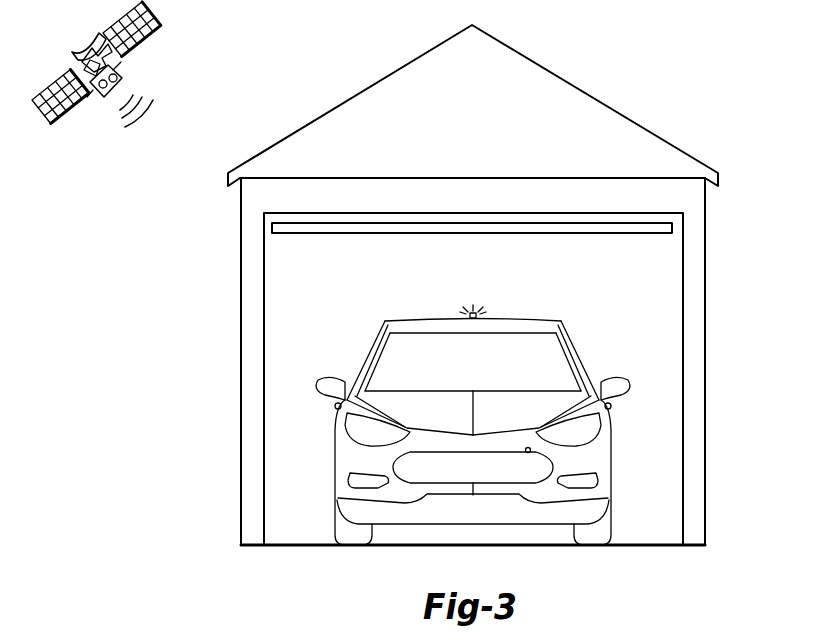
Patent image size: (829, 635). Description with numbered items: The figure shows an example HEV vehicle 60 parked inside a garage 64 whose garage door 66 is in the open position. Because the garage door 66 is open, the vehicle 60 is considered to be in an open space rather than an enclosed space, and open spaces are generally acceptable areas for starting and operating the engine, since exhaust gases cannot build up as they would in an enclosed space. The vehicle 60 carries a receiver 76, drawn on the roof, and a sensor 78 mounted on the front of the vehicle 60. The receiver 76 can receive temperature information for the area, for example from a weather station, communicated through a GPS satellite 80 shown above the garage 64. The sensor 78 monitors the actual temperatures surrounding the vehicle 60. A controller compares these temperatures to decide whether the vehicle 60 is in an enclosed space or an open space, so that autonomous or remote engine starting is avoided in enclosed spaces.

The vehicle 60 is at (495, 410).
The garage 64 is at (497, 285).
The garage door 66 is at (297, 228).
The receiver 76 is at (473, 313).
The sensor 78 is at (528, 447).
The GPS satellite 80 is at (196, 48).